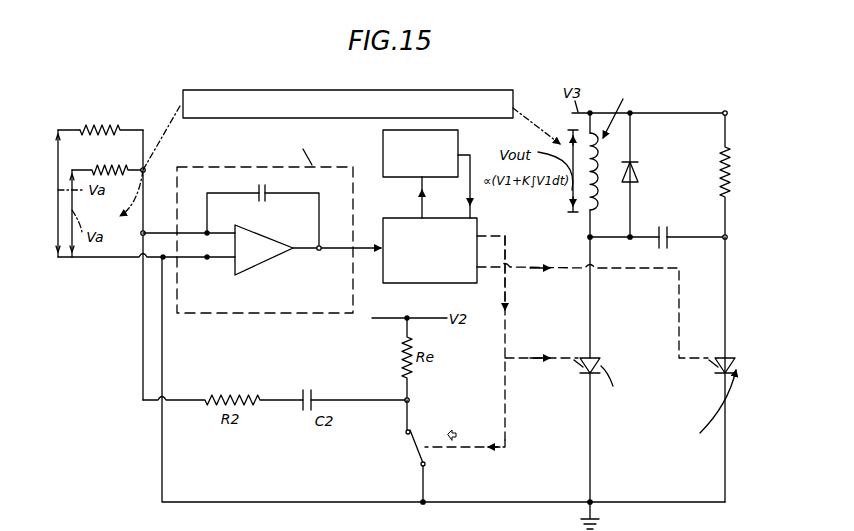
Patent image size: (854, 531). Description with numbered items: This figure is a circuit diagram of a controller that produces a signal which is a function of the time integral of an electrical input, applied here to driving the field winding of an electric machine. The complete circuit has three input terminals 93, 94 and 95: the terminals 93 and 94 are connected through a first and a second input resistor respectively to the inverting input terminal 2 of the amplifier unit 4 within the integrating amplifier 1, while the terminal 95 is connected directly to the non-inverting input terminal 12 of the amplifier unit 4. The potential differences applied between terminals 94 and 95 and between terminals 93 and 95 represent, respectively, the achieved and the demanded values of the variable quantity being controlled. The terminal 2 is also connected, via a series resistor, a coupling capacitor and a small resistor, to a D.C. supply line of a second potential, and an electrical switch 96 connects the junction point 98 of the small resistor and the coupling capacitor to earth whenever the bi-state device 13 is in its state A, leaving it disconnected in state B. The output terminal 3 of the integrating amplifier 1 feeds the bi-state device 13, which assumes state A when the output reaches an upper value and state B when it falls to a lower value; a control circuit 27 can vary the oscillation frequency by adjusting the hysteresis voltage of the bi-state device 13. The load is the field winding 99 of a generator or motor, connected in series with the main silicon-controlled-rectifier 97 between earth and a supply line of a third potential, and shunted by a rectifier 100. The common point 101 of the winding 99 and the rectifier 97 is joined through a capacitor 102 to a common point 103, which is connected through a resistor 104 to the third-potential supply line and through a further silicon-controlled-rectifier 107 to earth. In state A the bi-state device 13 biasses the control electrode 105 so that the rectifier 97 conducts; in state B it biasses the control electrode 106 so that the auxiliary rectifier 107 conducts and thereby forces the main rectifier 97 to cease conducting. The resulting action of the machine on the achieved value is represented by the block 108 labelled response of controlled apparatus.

The input terminal 93 is at (60, 128).
The input terminal 94 is at (73, 168).
The input terminal 95 is at (60, 258).
The block representing response of controlled apparatus 108 is at (240, 90).
The integrating amplifier 1 is at (343, 166).
The inverting input terminal 2 is at (208, 233).
The non-inverting input terminal 12 is at (208, 262).
The amplifier unit 4 is at (258, 270).
The output terminal 3 is at (319, 251).
The bi-state device 13 is at (400, 283).
The control circuit 27 is at (412, 178).
The junction point 98 is at (410, 400).
The electrical switch 96 is at (413, 449).
The field winding 99 is at (599, 200).
The rectifier 100 is at (641, 176).
The common point 101 is at (588, 238).
The capacitor 102 is at (668, 232).
The common point 103 is at (722, 240).
The resistor 104 is at (721, 152).
The main silicon-controlled-rectifier 97 is at (596, 357).
The control electrode 105 is at (576, 367).
The auxiliary silicon-controlled-rectifier 107 is at (720, 356).
The control electrode 106 is at (710, 367).